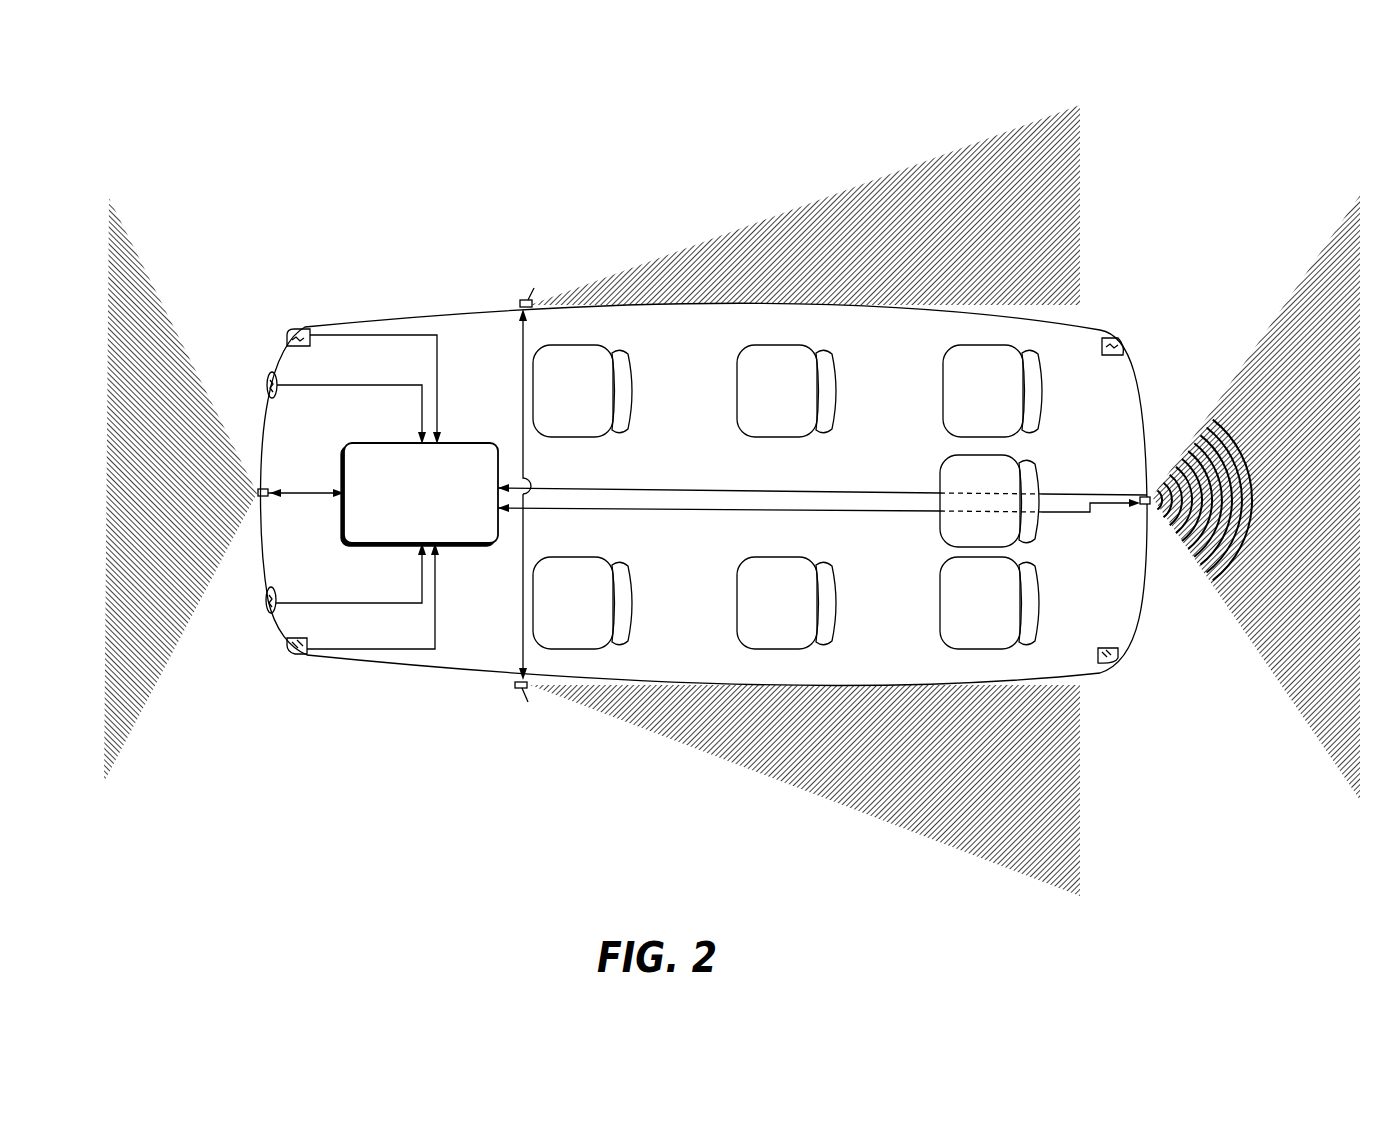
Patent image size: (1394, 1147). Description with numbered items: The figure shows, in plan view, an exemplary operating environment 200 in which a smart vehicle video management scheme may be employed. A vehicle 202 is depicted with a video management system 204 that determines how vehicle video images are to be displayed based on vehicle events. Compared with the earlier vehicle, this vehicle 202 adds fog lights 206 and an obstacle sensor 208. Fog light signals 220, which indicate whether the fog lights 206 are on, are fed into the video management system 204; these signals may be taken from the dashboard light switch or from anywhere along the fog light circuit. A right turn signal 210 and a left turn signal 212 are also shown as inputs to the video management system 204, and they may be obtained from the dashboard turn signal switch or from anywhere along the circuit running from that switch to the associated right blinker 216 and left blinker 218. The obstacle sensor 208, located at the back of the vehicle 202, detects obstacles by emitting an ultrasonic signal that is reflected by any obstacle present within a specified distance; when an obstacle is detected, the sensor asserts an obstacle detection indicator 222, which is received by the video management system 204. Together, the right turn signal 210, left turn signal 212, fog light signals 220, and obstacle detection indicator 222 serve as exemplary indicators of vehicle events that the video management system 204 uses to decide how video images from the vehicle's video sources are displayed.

The operating environment 200 is at (390, 147).
The vehicle 202 is at (455, 738).
The video management system 204 is at (453, 548).
The fog lights 206 is at (268, 378).
The obstacle sensor 208 is at (1151, 493).
The right turn signal 210 is at (437, 346).
The left turn signal 212 is at (435, 652).
The right blinker 216 is at (300, 330).
The left blinker 218 is at (300, 652).
The fog light signals 220 is at (346, 385).
The obstacle detection indicator 222 is at (1065, 490).